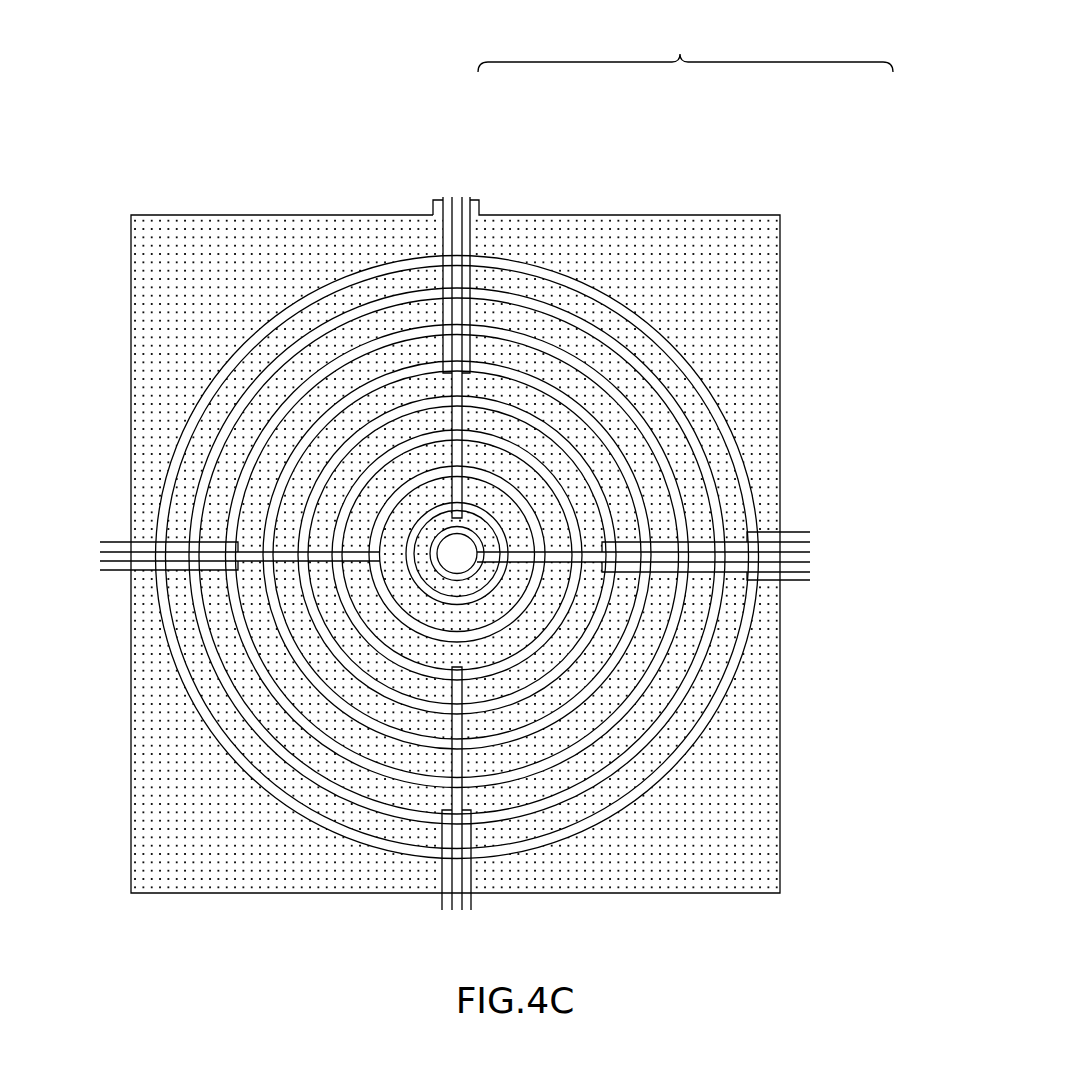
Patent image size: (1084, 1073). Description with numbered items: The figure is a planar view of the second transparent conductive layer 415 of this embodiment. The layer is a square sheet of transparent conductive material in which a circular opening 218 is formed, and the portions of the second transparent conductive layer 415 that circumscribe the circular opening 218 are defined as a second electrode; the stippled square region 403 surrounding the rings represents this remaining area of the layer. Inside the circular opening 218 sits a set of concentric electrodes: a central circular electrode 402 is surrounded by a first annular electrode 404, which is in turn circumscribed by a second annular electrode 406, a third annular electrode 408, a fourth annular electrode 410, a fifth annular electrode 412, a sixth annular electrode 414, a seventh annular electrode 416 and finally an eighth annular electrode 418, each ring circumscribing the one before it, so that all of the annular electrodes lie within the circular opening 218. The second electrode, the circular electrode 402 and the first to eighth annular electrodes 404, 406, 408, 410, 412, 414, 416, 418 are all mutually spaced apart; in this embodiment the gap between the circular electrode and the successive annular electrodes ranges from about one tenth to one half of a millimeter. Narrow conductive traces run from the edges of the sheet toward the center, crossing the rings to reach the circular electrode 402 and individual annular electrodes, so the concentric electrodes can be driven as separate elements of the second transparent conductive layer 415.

The circular opening 218 is at (327, 290).
The circular electrode 402 is at (467, 548).
The substrate 403 is at (748, 383).
The first annular electrode 404 is at (481, 535).
The second annular electrode 406 is at (503, 513).
The third annular electrode 408 is at (532, 493).
The fourth annular electrode 410 is at (563, 470).
The fifth annular electrode 412 is at (598, 460).
The sixth annular electrode 414 is at (632, 440).
The second transparent conductive layer 415 is at (685, 48).
The seventh annular electrode 416 is at (665, 425).
The eighth annular electrode 418 is at (695, 413).